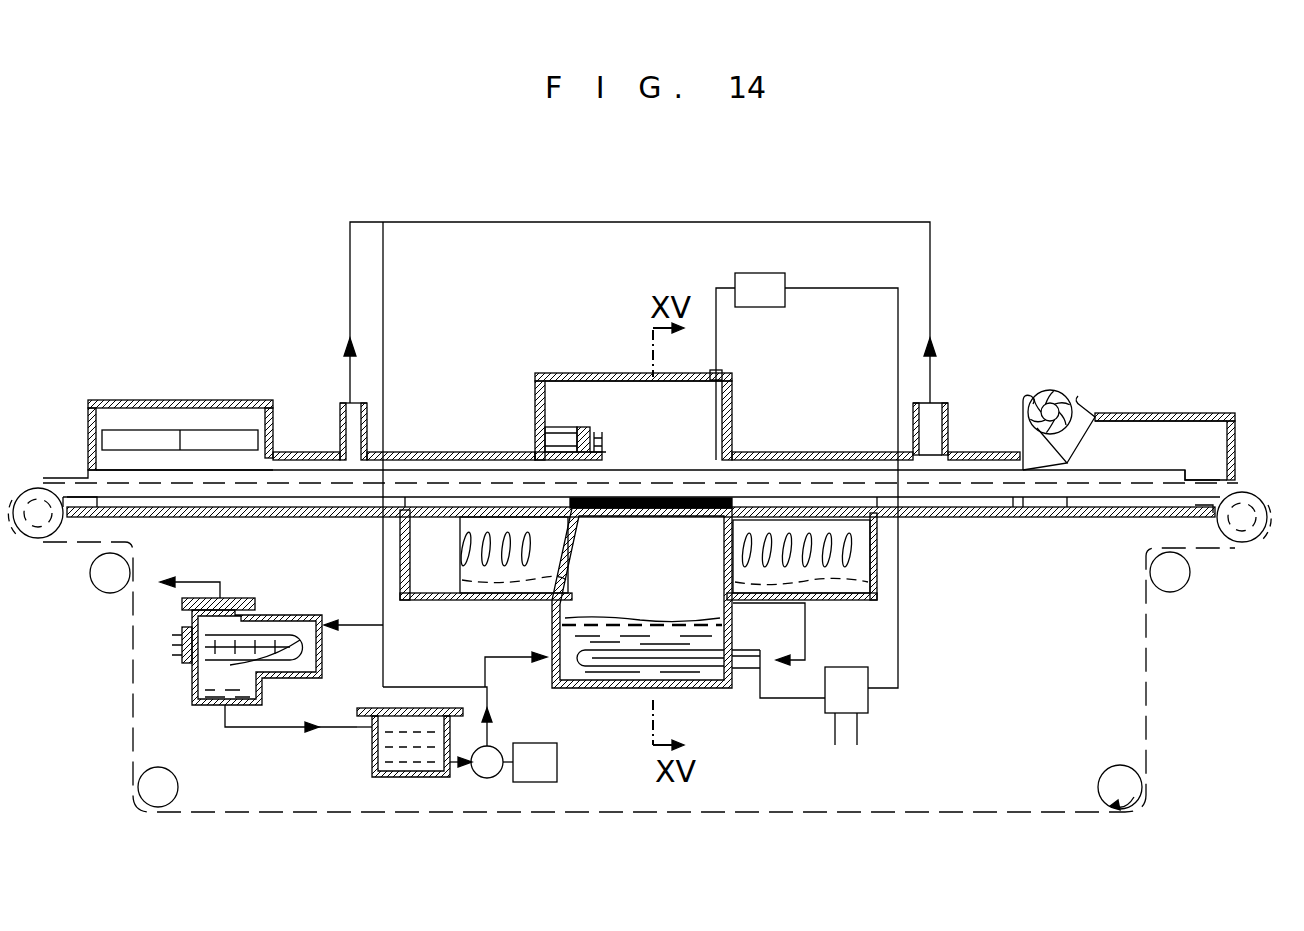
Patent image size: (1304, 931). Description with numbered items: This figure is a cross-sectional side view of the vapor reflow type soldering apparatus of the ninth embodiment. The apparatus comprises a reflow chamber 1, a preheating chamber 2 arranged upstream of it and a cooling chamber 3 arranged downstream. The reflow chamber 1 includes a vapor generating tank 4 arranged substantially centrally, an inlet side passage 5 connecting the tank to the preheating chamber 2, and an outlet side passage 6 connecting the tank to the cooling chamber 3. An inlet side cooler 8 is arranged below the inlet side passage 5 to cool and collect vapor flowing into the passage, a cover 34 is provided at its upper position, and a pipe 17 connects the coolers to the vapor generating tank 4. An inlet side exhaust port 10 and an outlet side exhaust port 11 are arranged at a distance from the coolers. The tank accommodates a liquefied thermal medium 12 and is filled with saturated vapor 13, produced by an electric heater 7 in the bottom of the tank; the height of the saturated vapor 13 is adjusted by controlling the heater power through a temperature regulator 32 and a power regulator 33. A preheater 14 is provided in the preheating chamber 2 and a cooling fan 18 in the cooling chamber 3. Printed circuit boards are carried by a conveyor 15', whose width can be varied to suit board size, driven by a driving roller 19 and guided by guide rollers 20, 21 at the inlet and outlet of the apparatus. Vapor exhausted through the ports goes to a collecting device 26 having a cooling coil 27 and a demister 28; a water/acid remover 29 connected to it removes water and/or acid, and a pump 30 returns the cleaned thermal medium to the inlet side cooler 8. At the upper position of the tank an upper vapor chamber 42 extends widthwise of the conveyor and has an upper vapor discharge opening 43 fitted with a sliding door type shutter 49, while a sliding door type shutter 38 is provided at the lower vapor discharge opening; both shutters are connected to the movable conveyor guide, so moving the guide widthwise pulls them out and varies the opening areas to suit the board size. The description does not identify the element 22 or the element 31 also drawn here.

The reflow chamber 1 is at (630, 372).
The preheating chamber 2 is at (96, 400).
The cooling chamber 3 is at (1210, 412).
The vapor generating tank 4 is at (535, 392).
The inlet side passage 5 is at (405, 452).
The outlet side passage 6 is at (845, 452).
The electric heater 7 is at (742, 702).
The inlet side cooler 8 is at (486, 556).
The inlet side exhaust port 10 is at (338, 432).
The outlet side exhaust port 11 is at (948, 420).
The liquefied thermal medium 12 is at (600, 680).
The saturated vapor 13 is at (590, 580).
The preheater 14 is at (215, 428).
The conveyor 15' is at (1244, 451).
The pipe 17 is at (806, 632).
The cooling fan 18 is at (1050, 390).
The driving roller 19 is at (1100, 768).
The guide roller 20 is at (38, 488).
The guide roller 21 is at (1245, 542).
The exhaust duct 22 is at (383, 262).
The collecting device 26 is at (316, 656).
The cooling coil 27 is at (295, 640).
The demister 28 is at (232, 598).
The water/acid remover 29 is at (360, 765).
The pump 30 is at (487, 778).
The supply pipe 31 is at (722, 405).
The temperature regulator 32 is at (778, 273).
The power regulator 33 is at (868, 703).
The cover 34 is at (1137, 470).
The sliding door type shutter 38 is at (718, 500).
The upper vapor chamber 42 is at (553, 425).
The upper vapor discharge opening 43 is at (583, 425).
The sliding door type shutter 49 is at (598, 430).